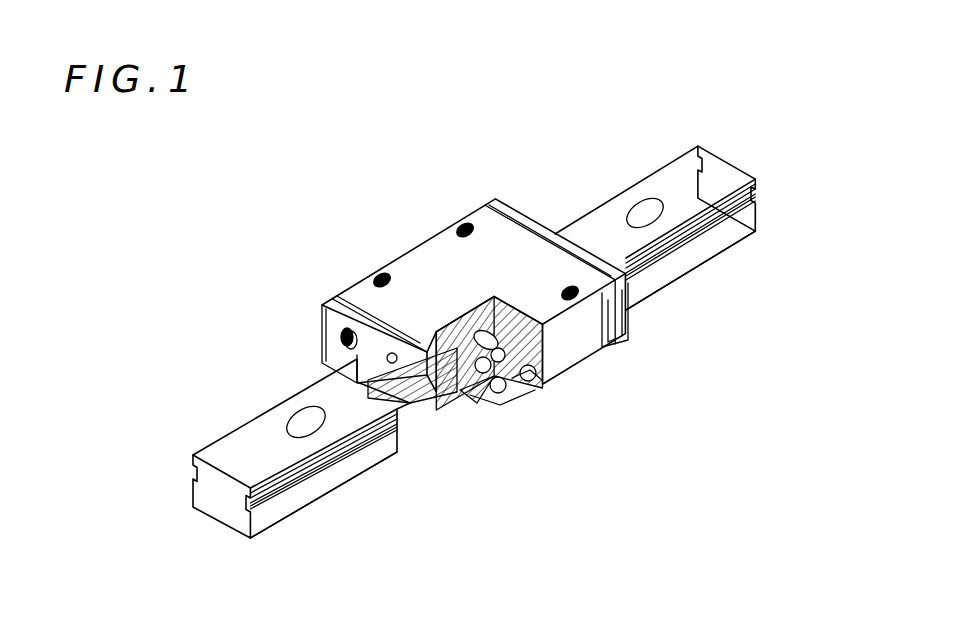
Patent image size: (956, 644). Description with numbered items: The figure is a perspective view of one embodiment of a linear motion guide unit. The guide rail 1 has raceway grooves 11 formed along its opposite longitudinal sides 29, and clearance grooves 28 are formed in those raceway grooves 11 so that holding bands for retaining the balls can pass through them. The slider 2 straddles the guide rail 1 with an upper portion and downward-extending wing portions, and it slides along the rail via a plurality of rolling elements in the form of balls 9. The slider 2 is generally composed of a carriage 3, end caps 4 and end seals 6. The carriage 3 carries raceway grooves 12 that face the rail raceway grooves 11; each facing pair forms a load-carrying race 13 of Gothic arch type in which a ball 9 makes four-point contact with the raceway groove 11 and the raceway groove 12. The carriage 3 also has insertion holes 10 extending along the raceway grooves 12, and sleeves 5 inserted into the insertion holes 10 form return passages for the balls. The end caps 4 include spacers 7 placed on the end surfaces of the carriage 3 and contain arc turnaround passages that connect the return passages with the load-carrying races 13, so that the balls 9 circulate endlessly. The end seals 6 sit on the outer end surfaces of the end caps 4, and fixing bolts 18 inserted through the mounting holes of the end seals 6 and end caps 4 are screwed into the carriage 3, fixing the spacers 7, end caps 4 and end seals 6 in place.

The guide rail 1 is at (240, 443).
The slider 2 is at (428, 222).
The carriage 3 is at (425, 270).
The end cap 4 is at (350, 303).
The sleeve 5 is at (520, 393).
The end seal 6 is at (322, 330).
The spacer 7 is at (445, 387).
The rolling element (ball) 9 is at (487, 395).
The insertion hole 10 is at (530, 393).
The raceway groove (first raceway groove) 11 is at (360, 450).
The raceway groove (second raceway groove) 12 is at (495, 330).
The load-carrying race 13 is at (503, 395).
The fixing bolt 18 is at (341, 340).
The clearance groove 28 is at (393, 440).
The longitudinal side 29 is at (313, 483).